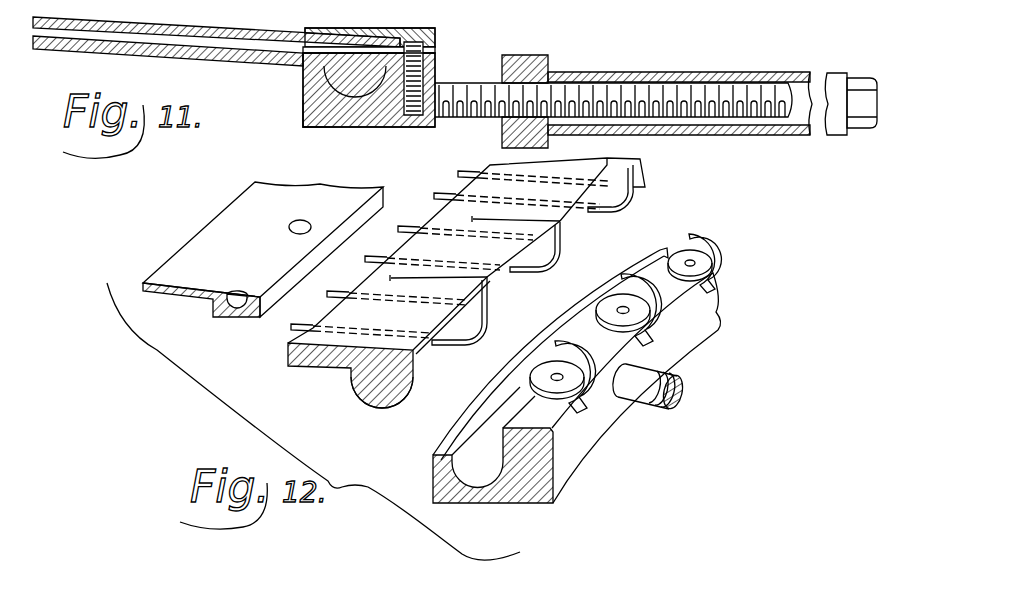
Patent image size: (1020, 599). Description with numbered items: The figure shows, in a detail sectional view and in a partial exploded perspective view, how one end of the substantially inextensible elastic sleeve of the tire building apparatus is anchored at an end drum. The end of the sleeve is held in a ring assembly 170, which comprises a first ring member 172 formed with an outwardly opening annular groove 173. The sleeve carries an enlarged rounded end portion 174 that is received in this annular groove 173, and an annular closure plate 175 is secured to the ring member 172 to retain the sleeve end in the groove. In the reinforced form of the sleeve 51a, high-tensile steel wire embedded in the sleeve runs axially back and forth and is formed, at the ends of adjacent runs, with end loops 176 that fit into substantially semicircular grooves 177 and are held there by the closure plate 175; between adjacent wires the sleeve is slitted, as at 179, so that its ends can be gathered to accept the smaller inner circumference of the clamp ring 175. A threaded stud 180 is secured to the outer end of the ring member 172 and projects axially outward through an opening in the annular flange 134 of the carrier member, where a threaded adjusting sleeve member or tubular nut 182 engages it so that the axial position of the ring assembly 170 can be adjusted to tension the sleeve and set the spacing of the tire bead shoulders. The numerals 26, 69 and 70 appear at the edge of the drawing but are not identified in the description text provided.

In FIG. 11, the frame member 26 is at (465, 6).
In FIG. 11, the sleeve 51a is at (203, 30).
In FIG. 12, the sleeve 51a is at (313, 364).
In FIG. 11, the upper plate 69 is at (216, 23).
In FIG. 11, the support 70 is at (567, 6).
In FIG. 11, the annular flange 134 is at (533, 63).
In FIG. 11, the ring assembly 170 is at (298, 119).
In FIG. 12, the ring assembly 170 is at (429, 478).
In FIG. 11, the first ring member 172 is at (353, 117).
In FIG. 12, the first ring member 172 is at (532, 483).
In FIG. 11, the annular groove 173 is at (368, 88).
In FIG. 12, the annular groove 173 is at (472, 447).
In FIG. 11, the enlarged rounded end portion 174 is at (322, 124).
In FIG. 12, the enlarged rounded end portion 174 is at (377, 395).
In FIG. 11, the annular closure plate 175 is at (432, 36).
In FIG. 12, the annular closure plate 175 is at (203, 226).
In FIG. 11, the end loops 176 is at (435, 52).
In FIG. 12, the end loops 176 is at (483, 341).
In FIG. 12, the semicircular grooves 177 is at (593, 325).
In FIG. 11, the slits 179 is at (413, 78).
In FIG. 12, the slits 179 is at (471, 300).
In FIG. 11, the threaded stud 180 is at (588, 90).
In FIG. 12, the threaded stud 180 is at (685, 383).
In FIG. 11, the tubular nut 182 is at (710, 72).